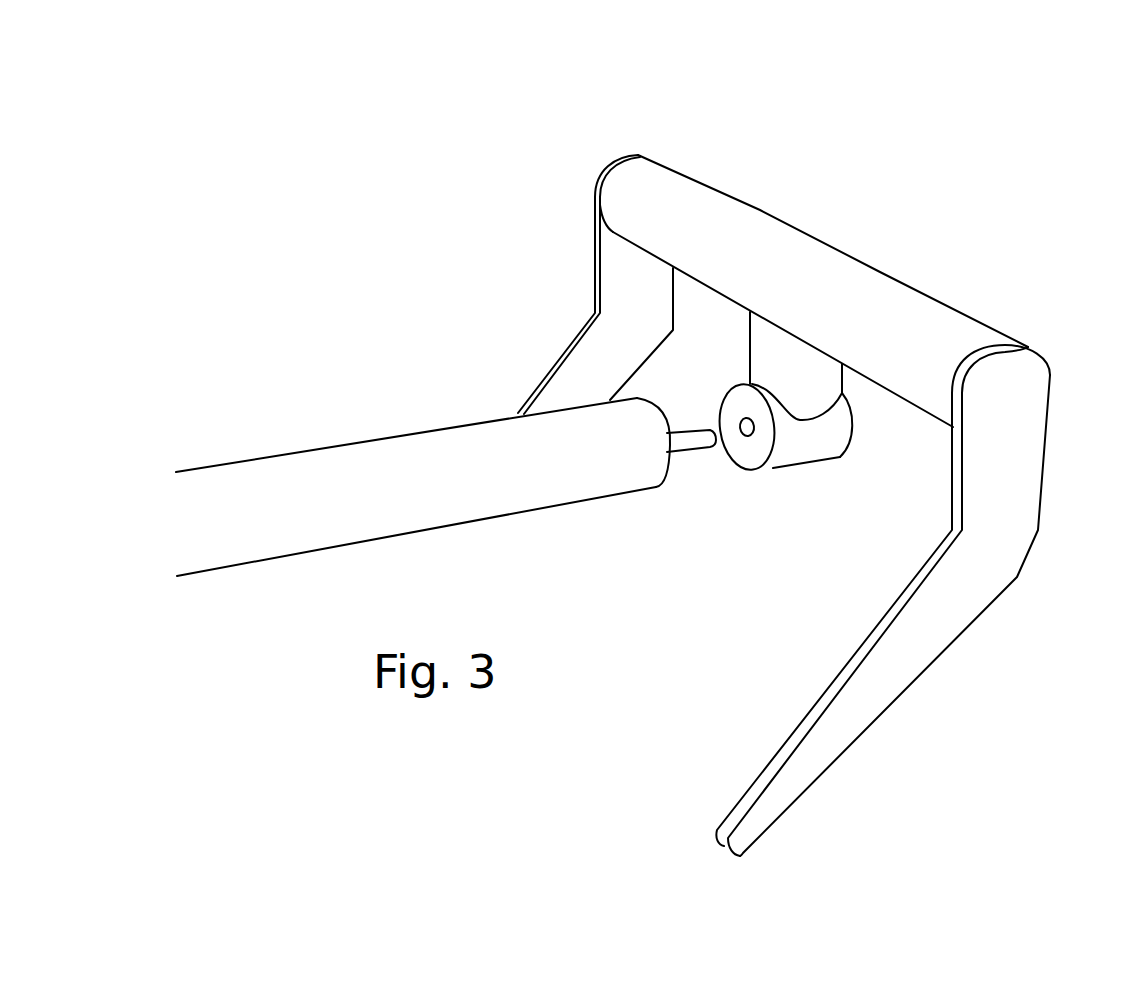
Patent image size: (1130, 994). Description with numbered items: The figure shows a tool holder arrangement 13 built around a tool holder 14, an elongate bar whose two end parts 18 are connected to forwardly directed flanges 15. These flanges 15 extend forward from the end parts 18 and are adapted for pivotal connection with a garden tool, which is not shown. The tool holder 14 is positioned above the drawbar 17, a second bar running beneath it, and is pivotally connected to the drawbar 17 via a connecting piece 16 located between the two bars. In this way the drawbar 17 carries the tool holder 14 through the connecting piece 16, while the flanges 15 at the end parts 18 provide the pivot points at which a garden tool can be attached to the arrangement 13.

The tool holder arrangement 13 is at (1013, 217).
The tool holder 14 is at (823, 258).
The forwardly directed flanges 15 is at (598, 362).
The connecting piece 16 is at (800, 450).
The drawbar 17 is at (273, 477).
The end parts 18 is at (632, 158).